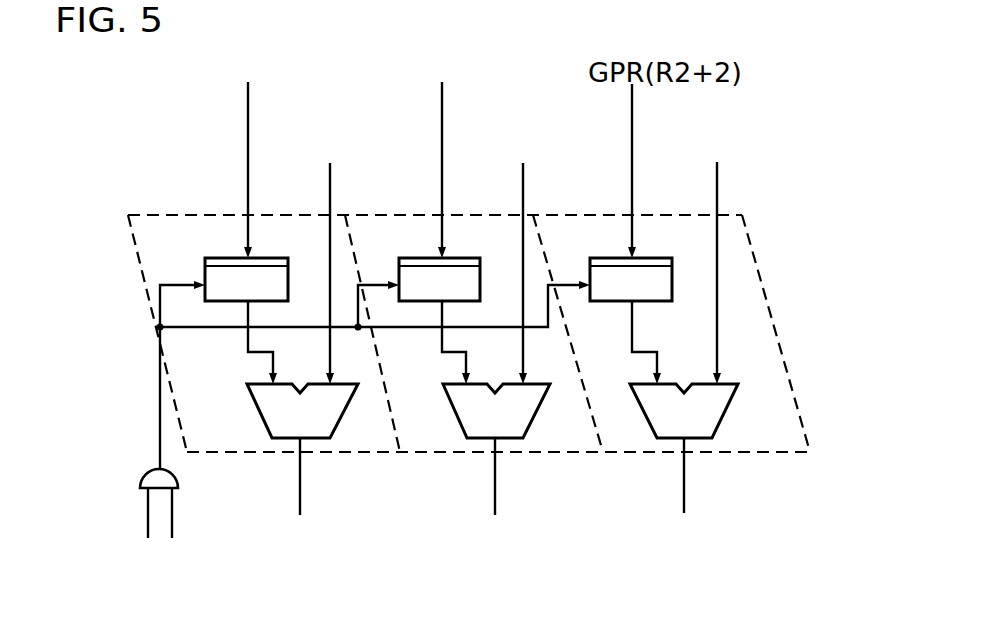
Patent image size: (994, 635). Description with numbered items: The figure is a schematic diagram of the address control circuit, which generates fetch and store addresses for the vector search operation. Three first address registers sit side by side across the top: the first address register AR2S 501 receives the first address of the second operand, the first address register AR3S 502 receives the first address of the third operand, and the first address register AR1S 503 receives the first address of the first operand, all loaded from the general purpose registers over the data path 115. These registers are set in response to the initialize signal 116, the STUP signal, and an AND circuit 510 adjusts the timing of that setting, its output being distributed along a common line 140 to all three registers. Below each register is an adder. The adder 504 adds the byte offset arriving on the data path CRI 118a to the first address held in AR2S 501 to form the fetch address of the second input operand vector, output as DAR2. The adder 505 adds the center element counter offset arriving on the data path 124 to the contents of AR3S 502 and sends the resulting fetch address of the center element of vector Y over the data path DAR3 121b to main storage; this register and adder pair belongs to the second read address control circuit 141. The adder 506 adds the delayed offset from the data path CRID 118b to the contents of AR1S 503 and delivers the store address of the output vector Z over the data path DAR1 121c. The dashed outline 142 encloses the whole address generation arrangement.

The data path 115 is at (248, 128).
The data path CRI 118a is at (330, 190).
The data path CRID 118b is at (717, 183).
The data path 124 is at (523, 180).
The read address control circuit 1 140 is at (150, 297).
The read address control circuit 2 141 is at (432, 452).
The address generation unit boundary 142 is at (778, 338).
The first address register AR2S 501 is at (222, 258).
The first address register AR3S 502 is at (430, 258).
The first address register AR1S 503 is at (623, 258).
The adder 504 is at (253, 387).
The adder 505 is at (457, 384).
The adder 506 is at (653, 383).
The AND circuit 510 is at (146, 481).
The initialize signal (STUP signal) 116 is at (148, 530).
The data path DAR3 121b is at (495, 482).
The data path DAR1 121c is at (684, 482).